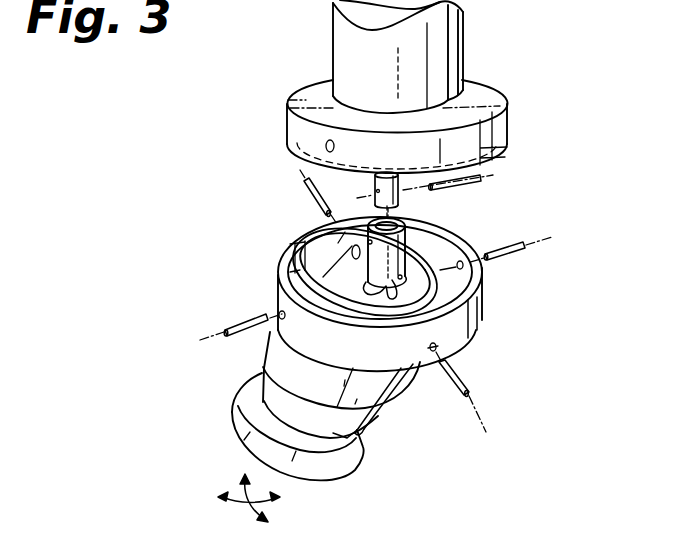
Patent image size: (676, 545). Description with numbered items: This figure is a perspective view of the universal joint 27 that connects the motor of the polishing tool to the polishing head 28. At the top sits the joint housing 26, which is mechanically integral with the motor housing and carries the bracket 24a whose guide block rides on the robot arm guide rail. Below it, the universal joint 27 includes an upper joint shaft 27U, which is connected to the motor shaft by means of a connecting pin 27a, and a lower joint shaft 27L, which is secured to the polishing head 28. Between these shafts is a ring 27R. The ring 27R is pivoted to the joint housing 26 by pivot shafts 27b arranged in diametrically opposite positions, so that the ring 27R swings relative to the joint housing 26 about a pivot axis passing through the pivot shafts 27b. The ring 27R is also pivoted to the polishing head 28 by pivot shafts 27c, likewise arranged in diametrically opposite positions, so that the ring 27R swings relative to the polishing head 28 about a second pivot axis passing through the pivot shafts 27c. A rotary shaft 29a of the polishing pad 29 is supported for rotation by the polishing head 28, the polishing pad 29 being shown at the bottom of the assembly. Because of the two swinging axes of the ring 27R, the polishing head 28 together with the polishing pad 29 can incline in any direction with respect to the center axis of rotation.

The joint housing 26 is at (503, 147).
The bracket 24a is at (403, 192).
The universal joint 27 is at (283, 249).
The upper joint shaft 27U is at (294, 257).
The lower joint shaft 27L is at (298, 280).
The ring 27R is at (484, 313).
The connecting pin 27a is at (480, 177).
The pivot shafts 27b is at (527, 247).
The pivot shafts 27c is at (305, 182).
The polishing head 28 is at (397, 403).
The rotary shaft 29a is at (355, 436).
The polishing pad 29 is at (352, 477).